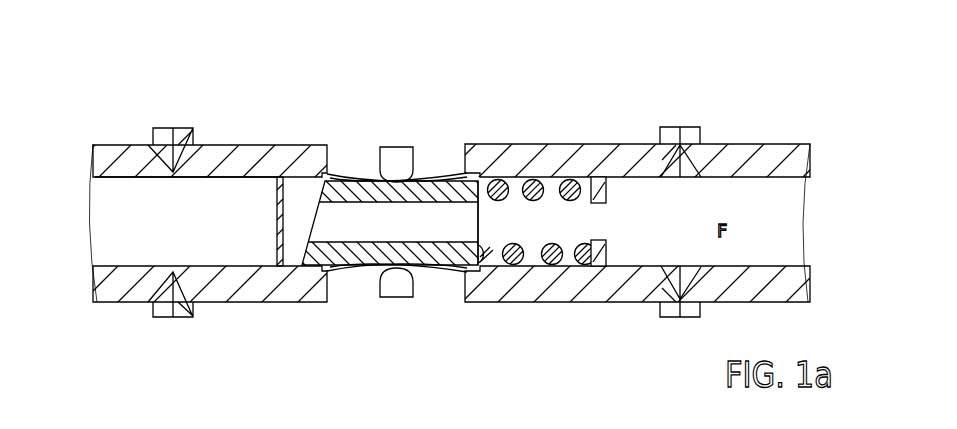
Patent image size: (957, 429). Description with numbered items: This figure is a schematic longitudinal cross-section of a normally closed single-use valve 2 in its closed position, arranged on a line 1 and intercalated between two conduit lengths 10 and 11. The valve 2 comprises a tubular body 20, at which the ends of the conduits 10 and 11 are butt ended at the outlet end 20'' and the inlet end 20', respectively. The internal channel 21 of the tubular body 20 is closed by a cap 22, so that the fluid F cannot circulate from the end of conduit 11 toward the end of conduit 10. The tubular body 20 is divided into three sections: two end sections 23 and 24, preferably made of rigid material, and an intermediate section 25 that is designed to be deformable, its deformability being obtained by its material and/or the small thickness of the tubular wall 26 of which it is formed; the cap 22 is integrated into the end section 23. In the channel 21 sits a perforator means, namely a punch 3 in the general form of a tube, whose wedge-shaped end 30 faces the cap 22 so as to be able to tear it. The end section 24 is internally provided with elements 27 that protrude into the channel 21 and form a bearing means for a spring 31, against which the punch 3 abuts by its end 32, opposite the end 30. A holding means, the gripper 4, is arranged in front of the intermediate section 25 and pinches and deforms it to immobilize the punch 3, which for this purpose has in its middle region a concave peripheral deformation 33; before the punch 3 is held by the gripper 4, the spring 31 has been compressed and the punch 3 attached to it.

The line 1 is at (478, 208).
The single-use valve 2 is at (628, 208).
The punch 3 is at (397, 213).
The gripper 4 is at (397, 288).
The conduit length 10 is at (135, 145).
The conduit length 11 is at (772, 163).
The tubular body 20 is at (258, 220).
The inlet end 20' is at (686, 167).
The outlet end 20'' is at (161, 179).
The internal channel 21 is at (202, 178).
The cap 22 is at (280, 228).
The end section 23 is at (271, 320).
The end section 24 is at (631, 318).
The intermediate section 25 is at (445, 312).
The tubular wall 26 is at (422, 178).
The elements 27 is at (570, 217).
The end of punch 30 is at (313, 197).
The spring 31 is at (551, 262).
The end of punch 32 is at (491, 181).
The concave peripheral deformation 33 is at (386, 262).